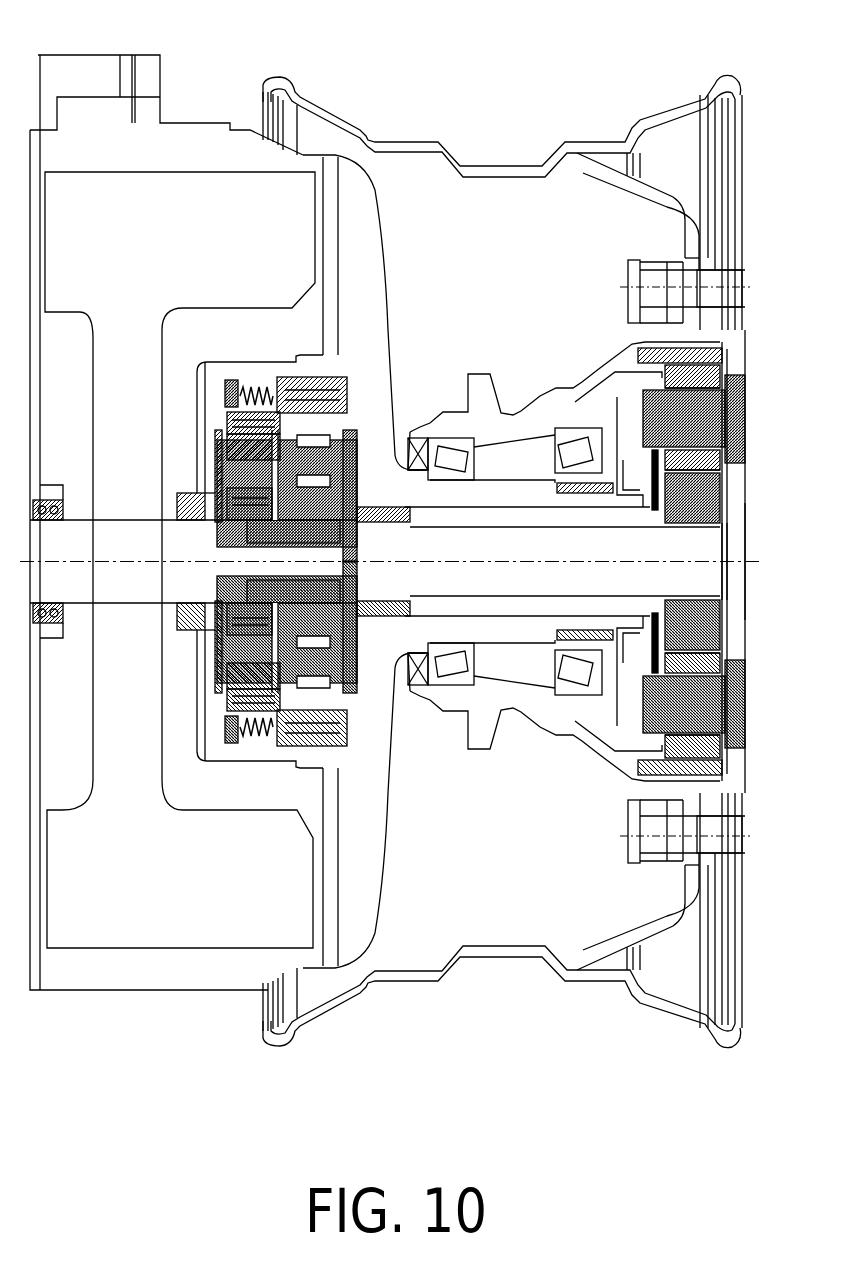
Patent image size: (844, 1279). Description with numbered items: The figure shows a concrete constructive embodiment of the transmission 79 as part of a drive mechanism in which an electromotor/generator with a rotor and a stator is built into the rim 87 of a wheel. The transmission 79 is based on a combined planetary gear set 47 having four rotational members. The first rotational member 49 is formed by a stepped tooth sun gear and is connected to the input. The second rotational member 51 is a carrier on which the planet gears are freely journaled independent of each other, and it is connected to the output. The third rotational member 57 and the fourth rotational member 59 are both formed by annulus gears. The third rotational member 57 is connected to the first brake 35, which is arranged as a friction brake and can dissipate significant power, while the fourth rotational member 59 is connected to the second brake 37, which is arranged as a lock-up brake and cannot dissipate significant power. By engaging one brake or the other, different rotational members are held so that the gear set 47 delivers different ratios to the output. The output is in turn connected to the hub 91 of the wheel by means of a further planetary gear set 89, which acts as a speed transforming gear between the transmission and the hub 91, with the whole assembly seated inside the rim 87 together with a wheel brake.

The first brake 35 is at (239, 407).
The second brake 37 is at (309, 382).
The combined planetary gear set 47 is at (199, 664).
The first rotational member 49 is at (239, 506).
The second rotational member 51 is at (224, 454).
The third rotational member 57 is at (229, 424).
The fourth rotational member 59 is at (337, 389).
The transmission 79 is at (210, 781).
The rim 87 is at (412, 138).
The further planetary gear set 89 is at (738, 772).
The hub 91 is at (606, 352).